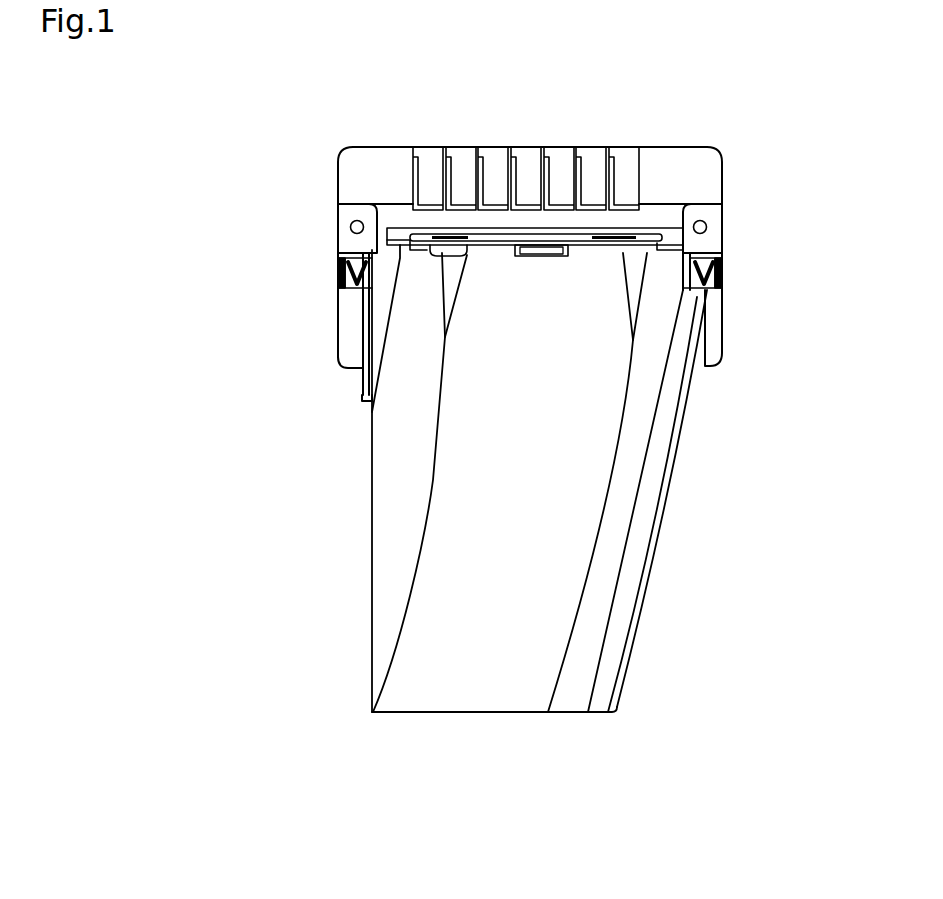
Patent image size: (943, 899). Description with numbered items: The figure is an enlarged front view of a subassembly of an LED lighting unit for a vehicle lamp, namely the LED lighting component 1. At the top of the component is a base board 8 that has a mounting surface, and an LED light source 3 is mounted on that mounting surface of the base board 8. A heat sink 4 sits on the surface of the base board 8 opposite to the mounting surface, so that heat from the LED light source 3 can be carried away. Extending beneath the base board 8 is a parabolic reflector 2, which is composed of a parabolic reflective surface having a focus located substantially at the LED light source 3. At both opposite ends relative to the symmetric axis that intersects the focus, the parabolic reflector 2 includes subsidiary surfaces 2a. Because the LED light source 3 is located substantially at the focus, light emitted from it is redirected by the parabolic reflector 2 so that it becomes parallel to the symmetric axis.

The LED lighting component 1 is at (763, 232).
The parabolic reflector 2 is at (470, 680).
The subsidiary surfaces 2a is at (395, 452).
The LED light source 3 is at (542, 255).
The heat sink 4 is at (677, 158).
The base board 8 is at (637, 233).